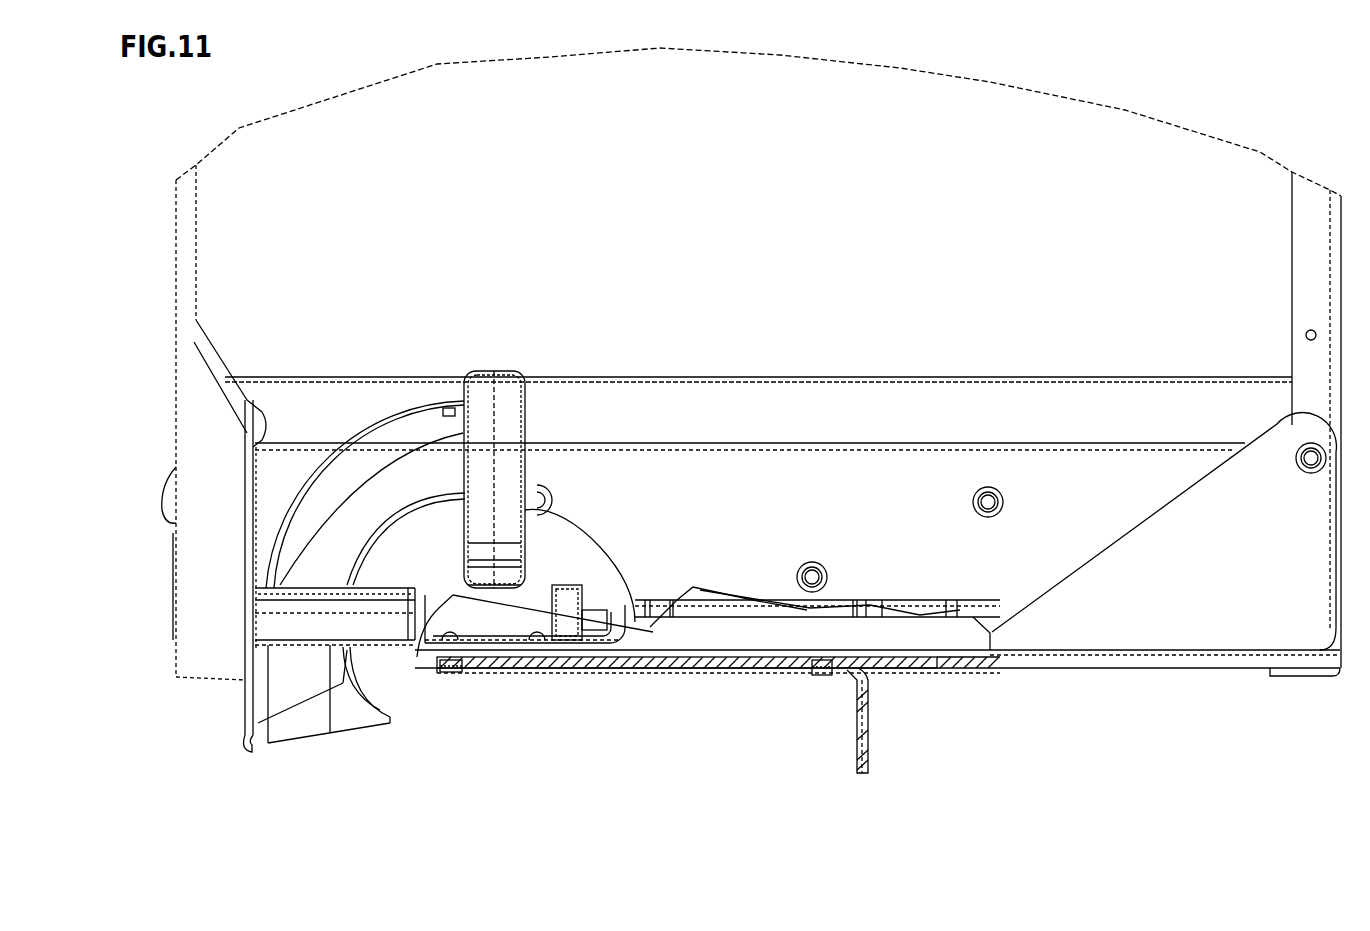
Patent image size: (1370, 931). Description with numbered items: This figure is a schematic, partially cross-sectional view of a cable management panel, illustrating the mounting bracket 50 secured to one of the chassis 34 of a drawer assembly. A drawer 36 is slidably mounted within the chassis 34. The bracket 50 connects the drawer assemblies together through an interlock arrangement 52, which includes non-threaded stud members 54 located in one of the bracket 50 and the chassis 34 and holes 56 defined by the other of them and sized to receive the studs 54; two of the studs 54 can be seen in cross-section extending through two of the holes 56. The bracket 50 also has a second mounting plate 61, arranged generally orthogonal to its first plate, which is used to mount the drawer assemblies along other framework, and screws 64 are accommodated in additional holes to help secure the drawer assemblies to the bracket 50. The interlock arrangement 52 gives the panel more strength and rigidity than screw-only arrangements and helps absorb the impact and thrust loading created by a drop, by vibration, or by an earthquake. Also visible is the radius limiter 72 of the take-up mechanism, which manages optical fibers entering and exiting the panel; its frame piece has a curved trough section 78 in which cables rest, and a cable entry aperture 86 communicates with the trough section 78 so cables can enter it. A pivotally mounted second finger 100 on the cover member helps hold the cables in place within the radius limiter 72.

The chassis 34 is at (937, 667).
The drawer 36 is at (183, 660).
The mounting bracket 50 is at (677, 673).
The interlock arrangement 52 is at (467, 705).
The non-threaded stud member 54 is at (453, 668).
The hole 56 is at (472, 677).
The second mounting plate 61 is at (868, 760).
The screw 64 is at (638, 677).
The radius limiter 72 is at (348, 748).
The trough section 78 is at (393, 433).
The cable entry aperture 86 is at (255, 737).
The second finger 100 is at (507, 452).